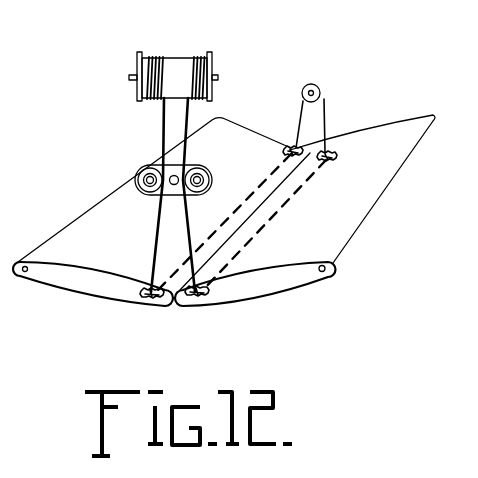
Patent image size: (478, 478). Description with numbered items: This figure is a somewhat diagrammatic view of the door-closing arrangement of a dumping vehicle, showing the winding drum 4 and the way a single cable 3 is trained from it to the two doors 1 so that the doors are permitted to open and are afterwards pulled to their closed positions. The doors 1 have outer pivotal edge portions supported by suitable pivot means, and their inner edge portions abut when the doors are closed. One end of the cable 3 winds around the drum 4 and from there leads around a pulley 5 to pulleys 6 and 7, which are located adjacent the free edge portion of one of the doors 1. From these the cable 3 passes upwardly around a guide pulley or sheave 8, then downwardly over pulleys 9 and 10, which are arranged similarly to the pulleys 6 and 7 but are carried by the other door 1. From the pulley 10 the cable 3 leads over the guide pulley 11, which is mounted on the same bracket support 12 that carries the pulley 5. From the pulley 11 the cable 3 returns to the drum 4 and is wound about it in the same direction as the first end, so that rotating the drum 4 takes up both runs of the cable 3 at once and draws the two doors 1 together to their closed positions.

The doors 1 is at (93, 217).
The cable 3 is at (162, 131).
The drum 4 is at (177, 63).
The pulley 5 is at (145, 192).
The pulley 6 is at (157, 303).
The pulley 7 is at (288, 142).
The guide pulley or sheave 8 is at (321, 93).
The pulley 9 is at (335, 165).
The pulley 10 is at (205, 303).
The guide pulley 11 is at (200, 187).
The bracket support 12 is at (180, 167).